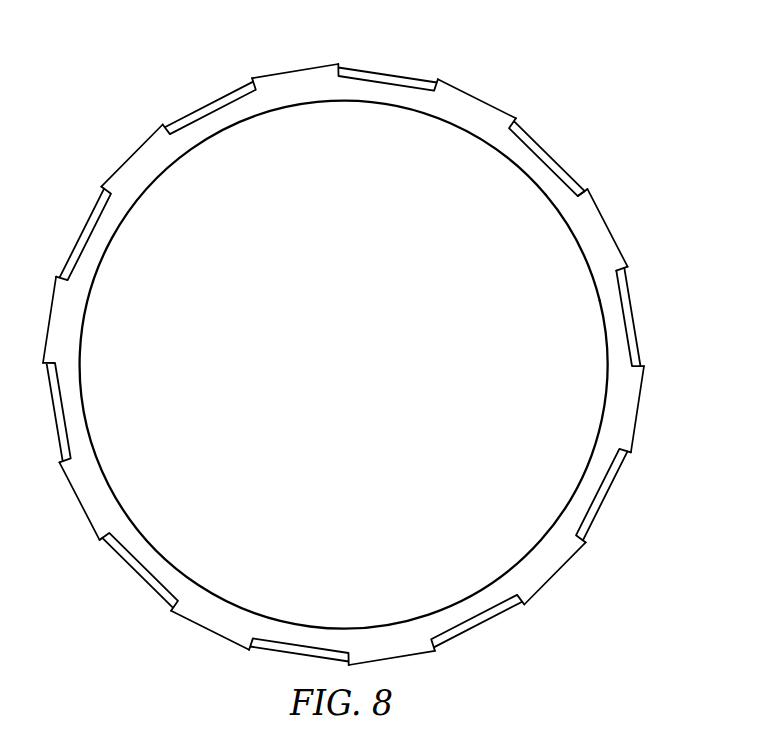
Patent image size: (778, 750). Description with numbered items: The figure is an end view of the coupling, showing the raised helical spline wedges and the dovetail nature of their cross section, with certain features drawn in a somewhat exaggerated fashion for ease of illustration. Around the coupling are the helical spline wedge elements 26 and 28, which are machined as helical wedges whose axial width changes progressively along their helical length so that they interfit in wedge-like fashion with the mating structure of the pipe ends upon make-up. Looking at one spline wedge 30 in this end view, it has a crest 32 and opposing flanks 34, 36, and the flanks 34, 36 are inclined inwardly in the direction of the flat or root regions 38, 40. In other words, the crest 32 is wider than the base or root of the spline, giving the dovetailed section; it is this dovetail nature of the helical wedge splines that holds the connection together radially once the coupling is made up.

The helical spline wedge element 26 is at (368, 344).
The helical spline wedge element 28 is at (477, 95).
The spline wedge 30 is at (608, 248).
The crest 32 is at (612, 225).
The flank 34 is at (583, 181).
The flank 36 is at (622, 273).
The root region 38 is at (545, 158).
The root region 40 is at (623, 317).